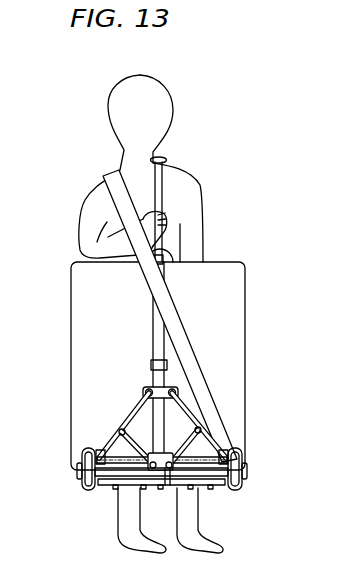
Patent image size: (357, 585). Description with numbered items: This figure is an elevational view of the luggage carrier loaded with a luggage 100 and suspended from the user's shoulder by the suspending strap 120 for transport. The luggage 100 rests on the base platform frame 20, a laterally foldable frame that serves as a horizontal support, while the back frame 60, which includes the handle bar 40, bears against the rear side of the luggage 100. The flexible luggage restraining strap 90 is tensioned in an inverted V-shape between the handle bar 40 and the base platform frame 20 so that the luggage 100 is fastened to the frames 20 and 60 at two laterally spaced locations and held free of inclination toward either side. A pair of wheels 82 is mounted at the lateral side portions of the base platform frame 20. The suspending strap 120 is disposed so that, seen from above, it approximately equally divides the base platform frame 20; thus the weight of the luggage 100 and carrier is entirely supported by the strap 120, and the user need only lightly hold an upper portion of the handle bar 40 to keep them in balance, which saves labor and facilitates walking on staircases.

The base platform frame 20 is at (190, 488).
The handle bar 40 is at (164, 180).
The back frame 60 is at (136, 419).
The wheel 82 is at (86, 491).
The luggage restraining strap 90 is at (168, 255).
The luggage 100 is at (235, 390).
The suspending strap 120 is at (176, 346).